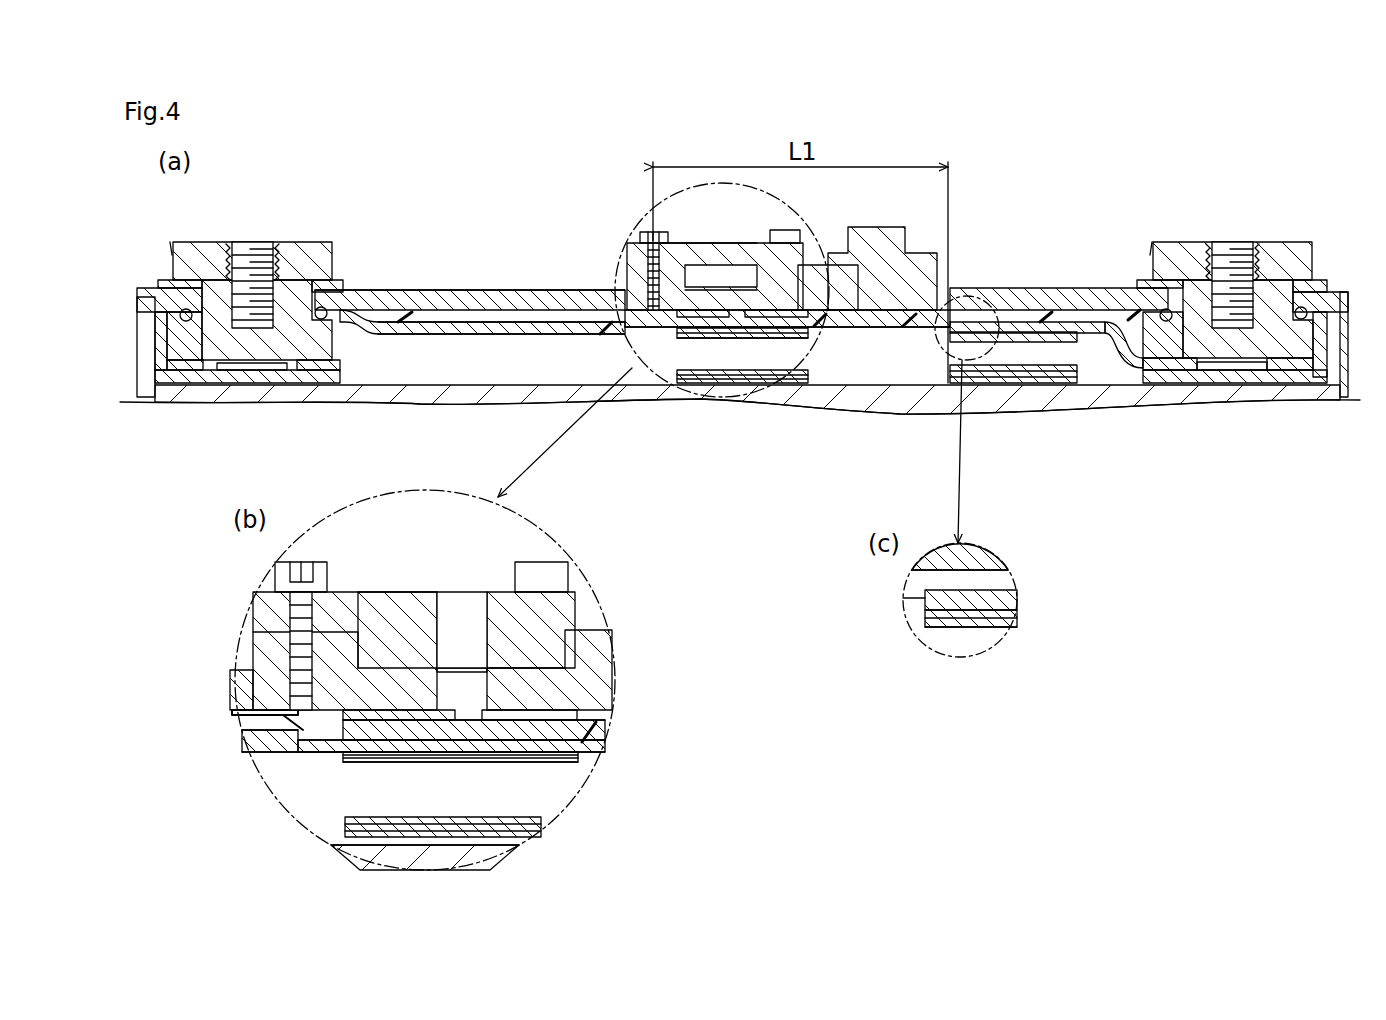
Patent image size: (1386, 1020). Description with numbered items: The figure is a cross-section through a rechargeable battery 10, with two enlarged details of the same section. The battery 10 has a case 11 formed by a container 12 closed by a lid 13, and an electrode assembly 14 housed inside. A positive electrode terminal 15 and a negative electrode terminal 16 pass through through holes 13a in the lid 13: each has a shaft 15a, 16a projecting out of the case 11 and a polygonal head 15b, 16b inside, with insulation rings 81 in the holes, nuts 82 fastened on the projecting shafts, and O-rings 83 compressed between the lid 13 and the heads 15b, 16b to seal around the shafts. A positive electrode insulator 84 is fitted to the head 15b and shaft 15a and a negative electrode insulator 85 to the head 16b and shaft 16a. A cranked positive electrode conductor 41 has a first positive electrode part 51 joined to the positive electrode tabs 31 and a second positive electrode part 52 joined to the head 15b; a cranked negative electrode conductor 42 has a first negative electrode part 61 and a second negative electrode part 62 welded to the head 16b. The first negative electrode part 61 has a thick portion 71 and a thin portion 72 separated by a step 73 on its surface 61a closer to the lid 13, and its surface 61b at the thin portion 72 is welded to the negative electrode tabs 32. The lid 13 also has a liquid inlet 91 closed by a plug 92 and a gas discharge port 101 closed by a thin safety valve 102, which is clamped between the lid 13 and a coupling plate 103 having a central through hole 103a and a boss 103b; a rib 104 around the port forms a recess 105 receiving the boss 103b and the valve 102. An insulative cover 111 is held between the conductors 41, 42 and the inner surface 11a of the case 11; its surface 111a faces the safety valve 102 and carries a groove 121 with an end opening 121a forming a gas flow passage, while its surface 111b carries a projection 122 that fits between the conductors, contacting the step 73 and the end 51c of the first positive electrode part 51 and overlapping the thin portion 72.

The rechargeable battery 10 is at (1228, 164).
The case 11 is at (1373, 212).
The inner surface of the case 11a is at (483, 290).
The container 12 is at (1345, 292).
The lid 13 is at (1312, 292).
The through holes 13a is at (180, 260).
The electrode assembly 14 is at (1342, 397).
The positive electrode terminal 15 is at (1270, 242).
The positive electrode shaft 15a is at (1215, 252).
The positive electrode head 15b is at (1240, 345).
The negative electrode terminal 16 is at (285, 240).
The negative electrode shaft 16a is at (245, 252).
The negative electrode head 16b is at (258, 360).
The positive electrode tabs 31 is at (1000, 383).
The negative electrode tabs 32 is at (780, 383).
The positive electrode conductor 41 is at (1043, 318).
The negative electrode conductor 42 is at (404, 318).
The first positive electrode part 51 is at (1092, 333).
The end of the first positive electrode part 51c is at (955, 342).
The second positive electrode part 52 is at (1162, 383).
The first negative electrode part 61 is at (497, 334).
The surface of the first negative electrode part closer to the lid 61a is at (452, 322).
The surface of the first negative electrode part closer to the negative electrode ta 61b is at (458, 334).
The second negative electrode part 62 is at (336, 370).
The thick portion 71 is at (605, 334).
The thin portion 72 is at (812, 334).
The step 73 is at (300, 750).
The insulation rings 81 is at (338, 280).
The nuts 82 is at (318, 240).
The O-rings 83 is at (190, 320).
The positive electrode insulator 84 is at (1195, 383).
The negative electrode insulator 85 is at (288, 370).
The liquid inlet 91 is at (900, 322).
The plug 92 is at (880, 228).
The gas discharge port 101 is at (765, 338).
The safety valve 102 is at (745, 266).
The coupling plate 103 is at (800, 246).
The through hole of the coupling plate 103a is at (725, 243).
The boss 103b is at (402, 650).
The rib 104 is at (630, 280).
The recess 105 is at (683, 239).
The cover 111 is at (866, 327).
The surface of the cover closer to the safety valve 111a is at (544, 290).
The surface of the cover closer to the conductors 111b is at (543, 327).
The groove 121 is at (725, 338).
The opening of the groove 121a is at (805, 312).
The projection 122 is at (690, 338).